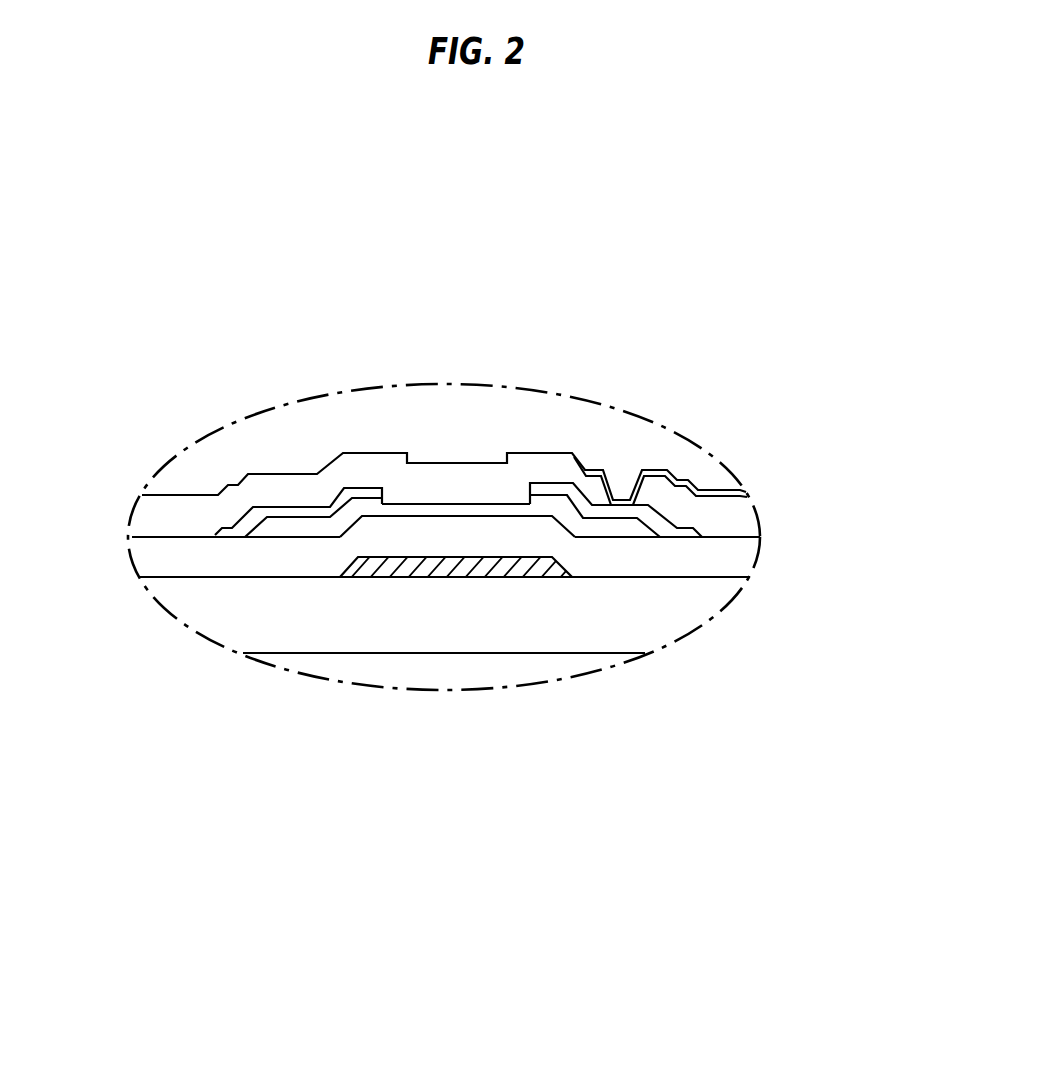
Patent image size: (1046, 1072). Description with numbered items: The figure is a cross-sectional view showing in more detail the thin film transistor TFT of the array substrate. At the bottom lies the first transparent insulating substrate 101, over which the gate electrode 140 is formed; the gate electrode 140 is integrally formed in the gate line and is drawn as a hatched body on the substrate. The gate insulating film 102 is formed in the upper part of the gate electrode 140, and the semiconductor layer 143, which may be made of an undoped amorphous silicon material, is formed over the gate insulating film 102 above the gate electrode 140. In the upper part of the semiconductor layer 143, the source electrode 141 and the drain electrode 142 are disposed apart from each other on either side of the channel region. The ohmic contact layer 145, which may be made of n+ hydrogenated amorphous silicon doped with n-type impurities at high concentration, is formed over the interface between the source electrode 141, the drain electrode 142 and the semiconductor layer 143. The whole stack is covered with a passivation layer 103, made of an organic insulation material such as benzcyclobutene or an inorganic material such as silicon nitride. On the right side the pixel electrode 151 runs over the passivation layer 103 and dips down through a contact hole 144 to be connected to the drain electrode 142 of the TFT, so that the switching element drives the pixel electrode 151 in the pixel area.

The first transparent insulating substrate 101 is at (700, 617).
The gate insulating film 102 is at (738, 558).
The passivation layer 103 is at (743, 510).
The gate electrode 140 is at (418, 572).
The source electrode 141 is at (334, 496).
The drain electrode 142 is at (572, 452).
The semiconductor layer 143 is at (357, 510).
The contact hole 144 is at (628, 473).
The ohmic contact layer 145 is at (283, 510).
The pixel electrode 151 is at (735, 488).
The thin film transistor TFT is at (503, 687).